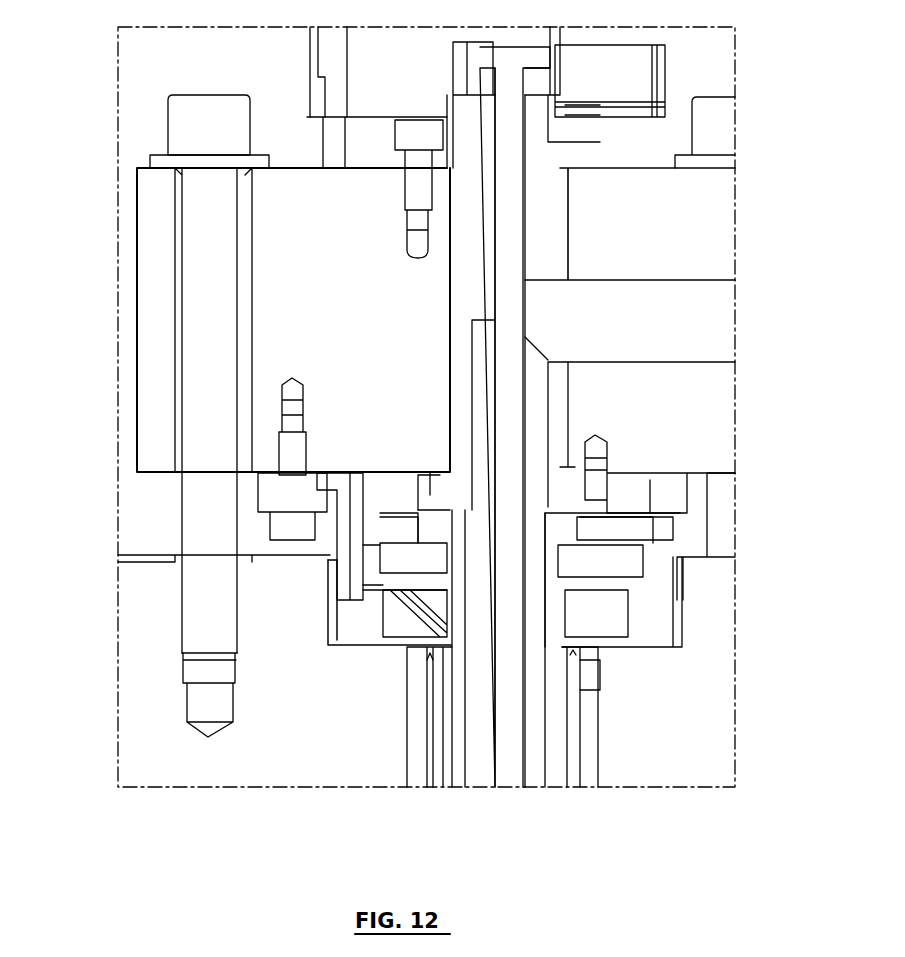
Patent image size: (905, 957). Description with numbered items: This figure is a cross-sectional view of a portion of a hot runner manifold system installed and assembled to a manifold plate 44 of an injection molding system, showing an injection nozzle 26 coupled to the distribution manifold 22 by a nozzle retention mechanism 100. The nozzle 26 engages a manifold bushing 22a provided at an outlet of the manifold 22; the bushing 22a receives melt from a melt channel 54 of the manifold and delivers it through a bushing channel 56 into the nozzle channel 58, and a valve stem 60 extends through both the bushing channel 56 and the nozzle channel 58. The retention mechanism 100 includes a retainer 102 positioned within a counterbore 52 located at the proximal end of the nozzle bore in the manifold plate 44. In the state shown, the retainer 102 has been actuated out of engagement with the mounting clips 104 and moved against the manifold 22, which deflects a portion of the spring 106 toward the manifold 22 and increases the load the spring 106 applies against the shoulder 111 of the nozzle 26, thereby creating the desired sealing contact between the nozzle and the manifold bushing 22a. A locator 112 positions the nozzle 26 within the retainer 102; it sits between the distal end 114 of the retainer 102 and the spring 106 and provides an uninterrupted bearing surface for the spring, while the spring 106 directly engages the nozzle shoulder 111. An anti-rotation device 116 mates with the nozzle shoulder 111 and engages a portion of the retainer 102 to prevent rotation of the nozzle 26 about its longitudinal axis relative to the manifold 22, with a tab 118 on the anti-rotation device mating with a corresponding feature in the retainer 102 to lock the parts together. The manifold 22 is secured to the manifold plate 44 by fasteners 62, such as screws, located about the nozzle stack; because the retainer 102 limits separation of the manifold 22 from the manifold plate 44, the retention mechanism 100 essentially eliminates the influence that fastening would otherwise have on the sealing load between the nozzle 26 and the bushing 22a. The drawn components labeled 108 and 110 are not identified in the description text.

The distribution manifold 22 is at (137, 253).
The manifold bushing 22a is at (462, 322).
The injection nozzle 26 is at (470, 752).
The manifold plate 44 is at (120, 650).
The counterbore 52 is at (320, 605).
The melt channel 54 is at (715, 318).
The bushing channel 56 is at (540, 402).
The nozzle channel 58 is at (530, 750).
The valve stem 60 is at (522, 215).
The fasteners 62 is at (195, 340).
The nozzle retention mechanism 100 is at (338, 665).
The retainer 102 is at (665, 600).
The mounting clips 104 is at (265, 500).
The spring 106 is at (633, 565).
The small screw 108 is at (312, 500).
The bracket 110 is at (336, 475).
The nozzle shoulder 111 is at (437, 525).
The locator 112 is at (373, 583).
The distal end of the retainer 114 is at (655, 647).
The anti-rotation device 116 is at (628, 525).
The tab 118 is at (665, 530).